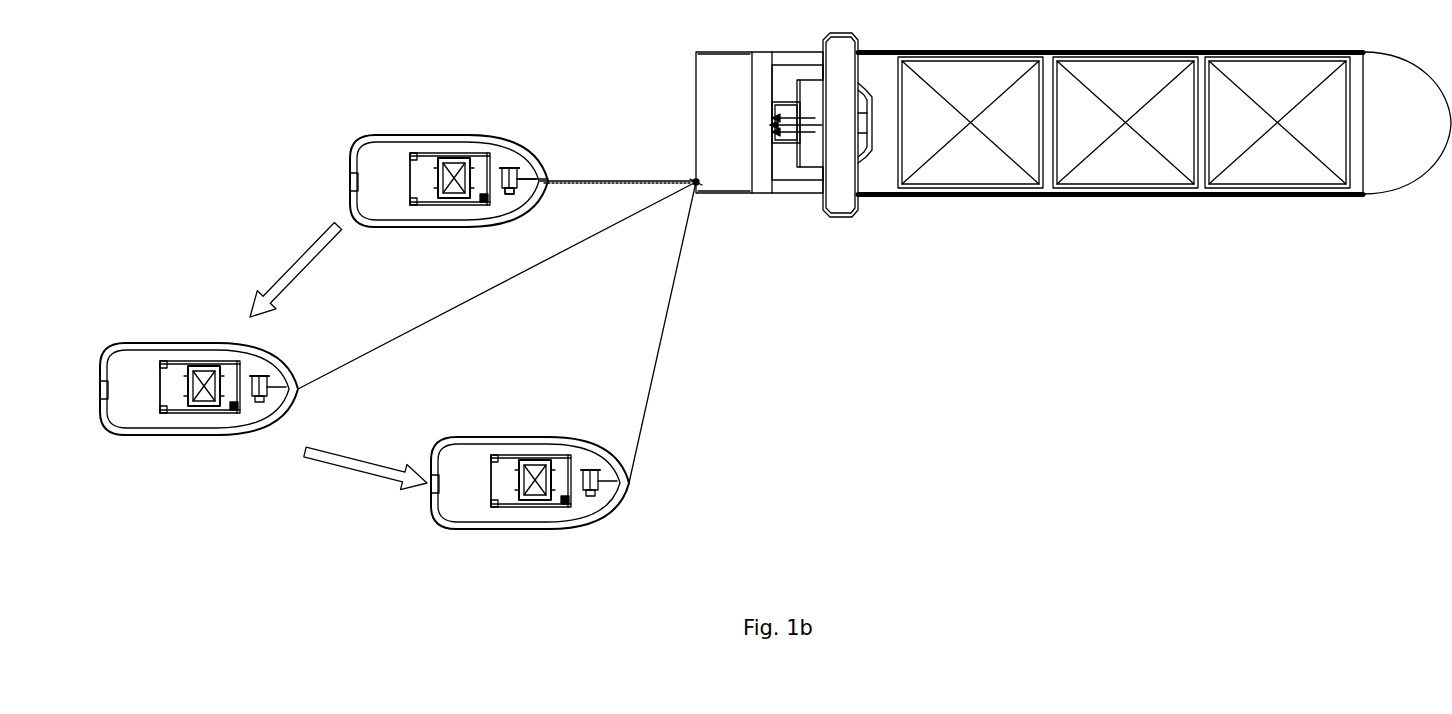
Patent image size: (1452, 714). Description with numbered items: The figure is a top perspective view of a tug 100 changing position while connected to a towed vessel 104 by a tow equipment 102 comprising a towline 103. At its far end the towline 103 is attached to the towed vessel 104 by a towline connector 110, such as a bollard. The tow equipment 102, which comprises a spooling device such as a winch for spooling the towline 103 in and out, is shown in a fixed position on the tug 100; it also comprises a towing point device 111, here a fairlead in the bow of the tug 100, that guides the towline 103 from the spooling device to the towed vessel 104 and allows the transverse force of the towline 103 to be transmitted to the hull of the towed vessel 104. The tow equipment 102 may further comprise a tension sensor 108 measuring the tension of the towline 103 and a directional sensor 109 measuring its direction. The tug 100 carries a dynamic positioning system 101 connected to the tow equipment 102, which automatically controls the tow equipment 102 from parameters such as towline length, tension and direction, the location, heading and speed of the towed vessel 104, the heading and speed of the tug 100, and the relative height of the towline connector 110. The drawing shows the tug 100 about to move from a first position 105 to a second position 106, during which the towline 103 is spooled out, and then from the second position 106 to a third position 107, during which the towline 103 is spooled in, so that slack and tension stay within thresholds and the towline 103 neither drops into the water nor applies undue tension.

The tug 100 is at (476, 195).
The dynamic positioning system 101 is at (455, 163).
The tow equipment 102 is at (526, 170).
The towline 103 is at (631, 180).
The towed vessel 104 is at (877, 68).
The first position 105 is at (449, 201).
The second position 106 is at (199, 412).
The third position 107 is at (530, 509).
The tension sensor 108 is at (513, 166).
The directional sensor 109 is at (523, 191).
The towline connector 110 is at (700, 188).
The towing point device 111 is at (548, 184).